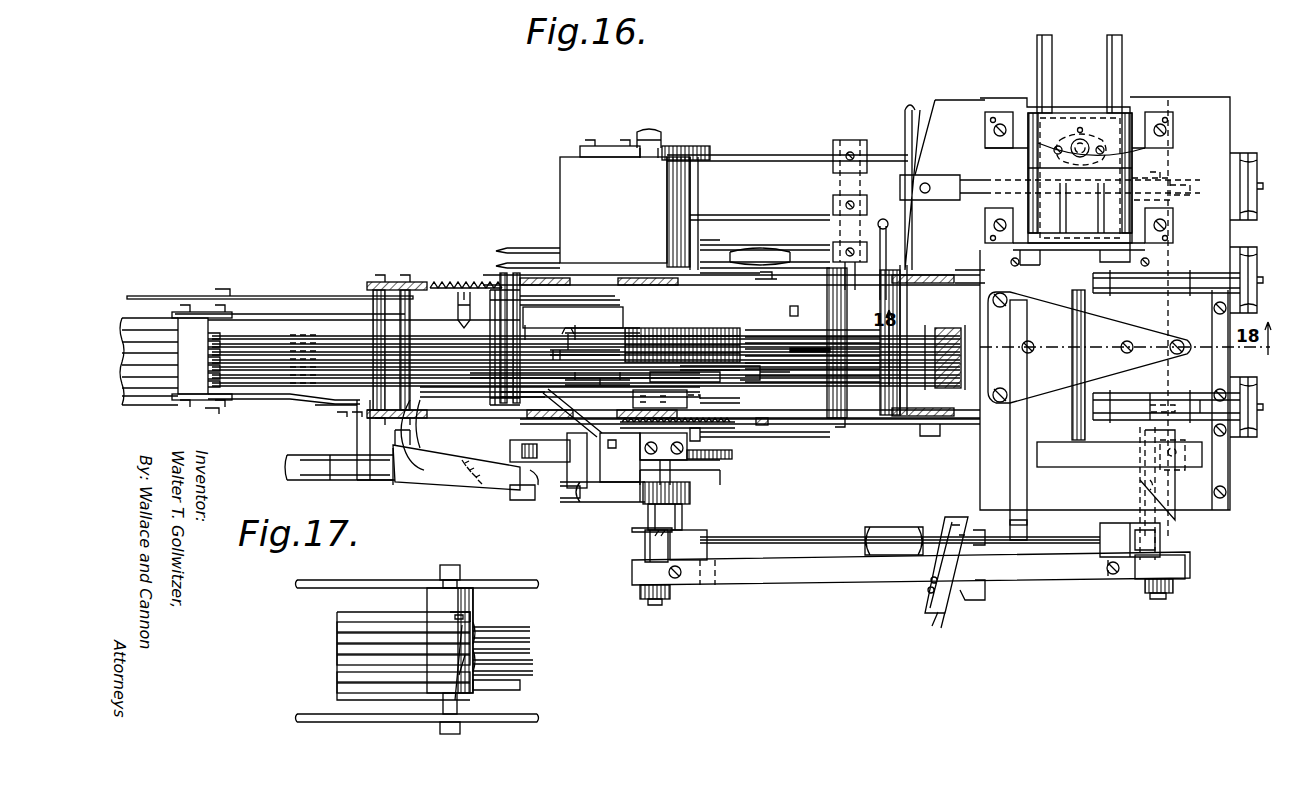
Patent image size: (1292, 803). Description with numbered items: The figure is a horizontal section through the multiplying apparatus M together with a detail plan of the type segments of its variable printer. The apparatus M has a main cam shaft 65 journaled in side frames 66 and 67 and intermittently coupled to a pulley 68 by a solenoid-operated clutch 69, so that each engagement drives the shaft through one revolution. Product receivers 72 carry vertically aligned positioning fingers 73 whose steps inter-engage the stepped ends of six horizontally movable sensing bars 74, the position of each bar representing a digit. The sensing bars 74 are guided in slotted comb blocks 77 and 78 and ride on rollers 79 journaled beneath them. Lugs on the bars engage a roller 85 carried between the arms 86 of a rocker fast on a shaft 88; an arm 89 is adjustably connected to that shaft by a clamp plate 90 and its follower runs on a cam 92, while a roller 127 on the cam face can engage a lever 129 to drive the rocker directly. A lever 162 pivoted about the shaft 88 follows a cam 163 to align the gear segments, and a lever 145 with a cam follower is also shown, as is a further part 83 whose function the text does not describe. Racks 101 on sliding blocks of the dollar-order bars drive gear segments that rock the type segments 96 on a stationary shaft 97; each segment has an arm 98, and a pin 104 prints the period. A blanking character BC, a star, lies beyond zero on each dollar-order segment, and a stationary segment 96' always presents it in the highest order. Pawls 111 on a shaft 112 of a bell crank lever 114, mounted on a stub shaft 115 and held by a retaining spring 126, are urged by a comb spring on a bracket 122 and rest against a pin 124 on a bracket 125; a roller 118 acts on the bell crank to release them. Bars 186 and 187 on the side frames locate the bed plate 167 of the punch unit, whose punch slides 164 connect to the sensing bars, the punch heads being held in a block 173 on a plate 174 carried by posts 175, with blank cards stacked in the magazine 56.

In FIG. 16, the multiplying apparatus M is at (151, 304).
In FIG. 16, the product receiver 72 is at (210, 343).
In FIG. 16, the positioning fingers 73 is at (257, 336).
In FIG. 16, the sensing bars 74 is at (350, 336).
In FIG. 16, the comb block 77 is at (430, 308).
In FIG. 16, the bracket 122 is at (482, 288).
In FIG. 16, the retaining spring 126 is at (461, 292).
In FIG. 16, the stub shaft 115 is at (510, 302).
In FIG. 16, the bell crank lever 114 is at (554, 302).
In FIG. 16, the pulley 68 is at (549, 255).
In FIG. 16, the main cam shaft 65 is at (650, 135).
In FIG. 16, the solenoid-operated clutch 69 is at (695, 203).
In FIG. 16, the side frame 67 is at (592, 285).
In FIG. 17, the side frame 67 is at (392, 588).
In FIG. 16, the roller 118 is at (700, 270).
In FIG. 16, the disc 83 is at (738, 272).
In FIG. 16, the bar 187 is at (944, 268).
In FIG. 16, the punch slides 164 is at (958, 328).
In FIG. 16, the comb block 78 is at (836, 400).
In FIG. 16, the roller 85 is at (713, 328).
In FIG. 16, the racks 101 is at (776, 330).
In FIG. 16, the roller 79 is at (828, 312).
In FIG. 16, the arms 86 is at (663, 318).
In FIG. 16, the shaft 112 is at (550, 324).
In FIG. 16, the pawls 111 is at (580, 329).
In FIG. 16, the cam 163 is at (743, 380).
In FIG. 16, the lever 162 is at (748, 392).
In FIG. 16, the shaft 88 is at (701, 398).
In FIG. 16, the side frame 66 is at (814, 420).
In FIG. 17, the side frame 66 is at (354, 729).
In FIG. 16, the bar 186 is at (856, 426).
In FIG. 16, the lever 129 is at (792, 438).
In FIG. 16, the cam 92 is at (747, 460).
In FIG. 16, the clamp plate 90 is at (677, 474).
In FIG. 16, the arm 89 is at (574, 488).
In FIG. 16, the roller 127 is at (545, 457).
In FIG. 16, the pin 124 is at (454, 412).
In FIG. 16, the bracket 125 is at (404, 430).
In FIG. 16, the lever 145 is at (468, 468).
In FIG. 16, the bed plate 167 is at (1186, 112).
In FIG. 16, the magazine 56 is at (1133, 108).
In FIG. 16, the block 173 is at (1118, 322).
In FIG. 16, the plate 174 is at (1047, 316).
In FIG. 16, the posts 175 is at (1001, 308).
In FIG. 17, the type segments 96 is at (377, 656).
In FIG. 17, the type segment 96' is at (409, 607).
In FIG. 17, the blanking character BC is at (477, 626).
In FIG. 17, the arm 98 is at (533, 638).
In FIG. 17, the pin 104 is at (520, 690).
In FIG. 17, the stationary shaft 97 is at (474, 710).